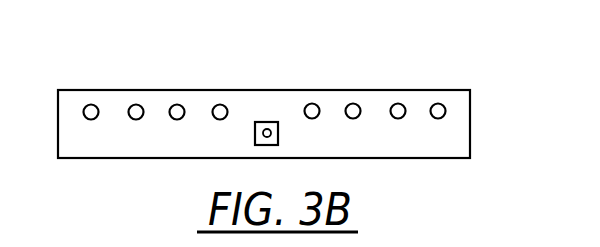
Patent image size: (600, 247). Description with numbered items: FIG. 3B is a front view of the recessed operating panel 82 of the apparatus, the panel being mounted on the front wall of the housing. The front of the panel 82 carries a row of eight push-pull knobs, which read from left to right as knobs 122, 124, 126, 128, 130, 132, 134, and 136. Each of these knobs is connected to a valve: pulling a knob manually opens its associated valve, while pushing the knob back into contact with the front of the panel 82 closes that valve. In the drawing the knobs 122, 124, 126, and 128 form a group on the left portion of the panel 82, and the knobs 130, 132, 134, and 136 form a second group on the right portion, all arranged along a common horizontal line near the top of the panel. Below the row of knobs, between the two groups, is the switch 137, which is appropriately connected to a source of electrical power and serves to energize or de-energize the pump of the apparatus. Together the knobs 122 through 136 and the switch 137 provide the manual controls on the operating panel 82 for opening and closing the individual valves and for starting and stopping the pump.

The recessed operating panel 82 is at (435, 135).
The push-pull knob 122 is at (88, 104).
The push-pull knob 124 is at (135, 104).
The push-pull knob 126 is at (178, 104).
The push-pull knob 128 is at (222, 104).
The push-pull knob 130 is at (312, 103).
The push-pull knob 132 is at (355, 103).
The push-pull knob 134 is at (400, 103).
The push-pull knob 136 is at (441, 103).
The switch 137 is at (267, 145).